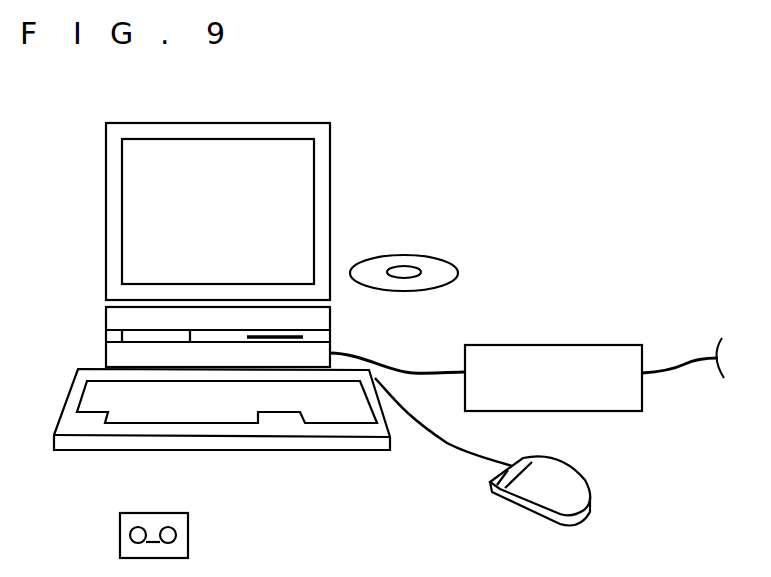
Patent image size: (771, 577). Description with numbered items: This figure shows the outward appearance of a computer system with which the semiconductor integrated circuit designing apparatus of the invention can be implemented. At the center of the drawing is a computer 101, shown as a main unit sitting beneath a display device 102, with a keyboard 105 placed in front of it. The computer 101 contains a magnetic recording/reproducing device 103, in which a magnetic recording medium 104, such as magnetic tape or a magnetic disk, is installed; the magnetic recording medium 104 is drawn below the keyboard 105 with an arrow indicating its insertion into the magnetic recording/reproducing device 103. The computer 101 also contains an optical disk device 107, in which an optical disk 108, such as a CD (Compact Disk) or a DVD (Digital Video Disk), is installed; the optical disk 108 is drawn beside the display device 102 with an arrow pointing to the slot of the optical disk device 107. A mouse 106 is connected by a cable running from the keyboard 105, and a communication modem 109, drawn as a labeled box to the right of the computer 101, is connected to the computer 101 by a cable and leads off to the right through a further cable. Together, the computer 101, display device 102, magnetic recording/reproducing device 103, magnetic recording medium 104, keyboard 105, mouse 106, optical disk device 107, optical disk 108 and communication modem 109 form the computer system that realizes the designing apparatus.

The computer 101 is at (106, 355).
The display device 102 is at (106, 212).
The magnetic recording/reproducing device 103 is at (147, 337).
The magnetic recording medium 104 is at (154, 350).
The keyboard 105 is at (332, 450).
The mouse 106 is at (563, 480).
The optical disk device 107 is at (285, 338).
The optical disk 108 is at (298, 328).
The communication modem 109 is at (506, 345).